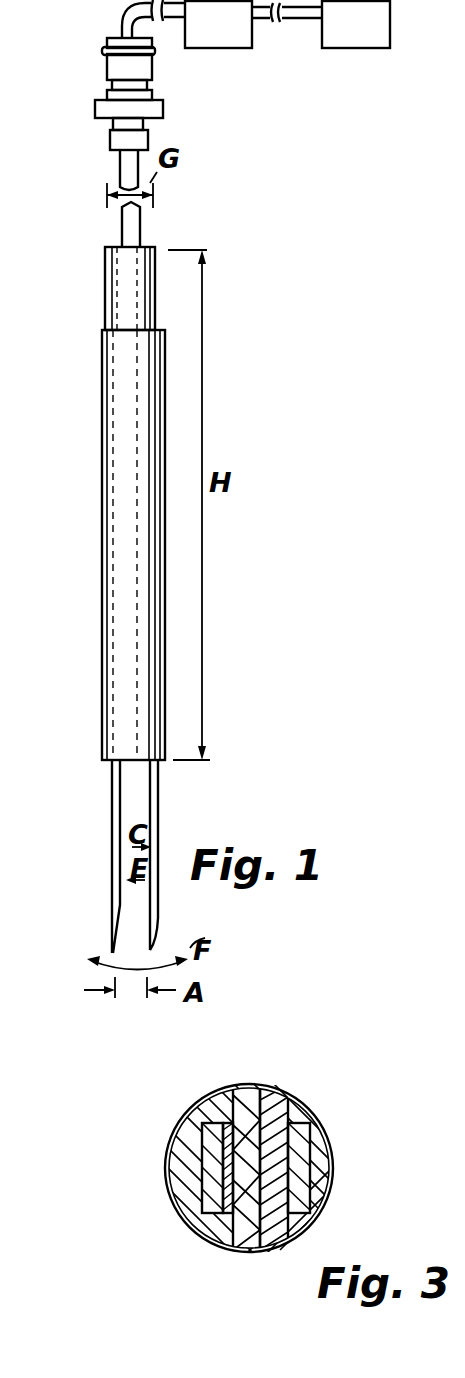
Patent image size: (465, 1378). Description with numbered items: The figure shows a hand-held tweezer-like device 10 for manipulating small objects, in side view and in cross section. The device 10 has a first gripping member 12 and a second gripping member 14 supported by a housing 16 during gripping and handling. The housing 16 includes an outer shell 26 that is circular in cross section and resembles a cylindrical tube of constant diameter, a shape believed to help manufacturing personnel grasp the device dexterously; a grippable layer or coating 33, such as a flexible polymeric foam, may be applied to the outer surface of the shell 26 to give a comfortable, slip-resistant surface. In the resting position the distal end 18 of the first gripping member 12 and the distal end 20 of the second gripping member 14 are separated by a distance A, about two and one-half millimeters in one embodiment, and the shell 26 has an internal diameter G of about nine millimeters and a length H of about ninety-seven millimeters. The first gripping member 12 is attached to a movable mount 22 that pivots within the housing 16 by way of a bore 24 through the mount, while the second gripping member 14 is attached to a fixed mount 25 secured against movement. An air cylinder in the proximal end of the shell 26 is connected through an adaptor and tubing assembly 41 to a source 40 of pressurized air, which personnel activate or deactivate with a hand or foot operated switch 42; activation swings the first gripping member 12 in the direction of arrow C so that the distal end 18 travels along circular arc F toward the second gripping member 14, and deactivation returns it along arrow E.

In FIG. 1, the device 10 is at (85, 453).
In FIG. 3, the device 10 is at (197, 1250).
In FIG. 1, the first gripping member 12 is at (113, 828).
In FIG. 3, the first gripping member 12 is at (320, 1160).
In FIG. 1, the second gripping member 14 is at (160, 798).
In FIG. 3, the second gripping member 14 is at (185, 1129).
In FIG. 1, the housing 16 is at (108, 262).
In FIG. 3, the housing 16 is at (252, 1087).
In FIG. 1, the distal end of first gripping member 18 is at (114, 950).
In FIG. 1, the distal end of second gripping member 20 is at (158, 923).
In FIG. 3, the movable mount 22 is at (308, 1111).
In FIG. 3, the bore 24 is at (229, 1088).
In FIG. 3, the fixed mount 25 is at (294, 1089).
In FIG. 1, the outer shell 26 is at (105, 285).
In FIG. 3, the outer shell 26 is at (304, 1091).
In FIG. 1, the grippable layer or coating 33 is at (100, 524).
In FIG. 1, the source of pressurized air 40 is at (362, 48).
In FIG. 1, the adaptor and tubing assembly 41 is at (168, 35).
In FIG. 1, the hand or foot operated switch 42 is at (218, 48).